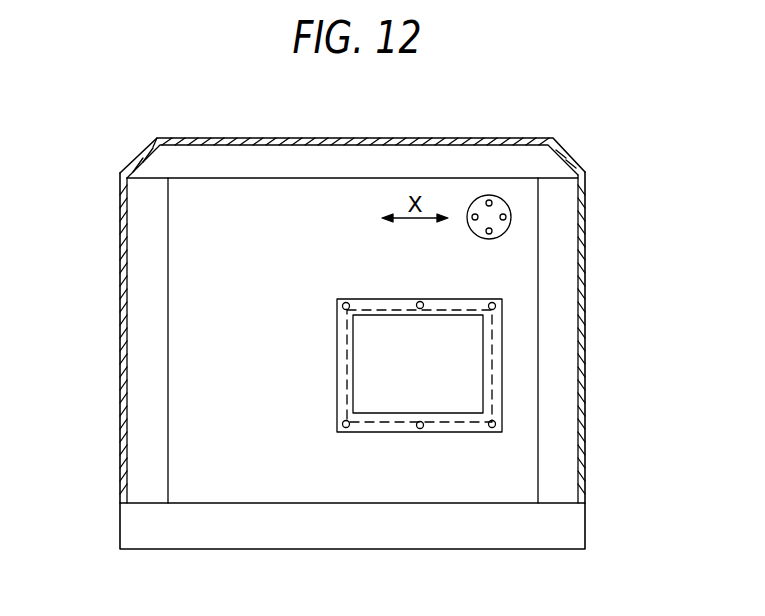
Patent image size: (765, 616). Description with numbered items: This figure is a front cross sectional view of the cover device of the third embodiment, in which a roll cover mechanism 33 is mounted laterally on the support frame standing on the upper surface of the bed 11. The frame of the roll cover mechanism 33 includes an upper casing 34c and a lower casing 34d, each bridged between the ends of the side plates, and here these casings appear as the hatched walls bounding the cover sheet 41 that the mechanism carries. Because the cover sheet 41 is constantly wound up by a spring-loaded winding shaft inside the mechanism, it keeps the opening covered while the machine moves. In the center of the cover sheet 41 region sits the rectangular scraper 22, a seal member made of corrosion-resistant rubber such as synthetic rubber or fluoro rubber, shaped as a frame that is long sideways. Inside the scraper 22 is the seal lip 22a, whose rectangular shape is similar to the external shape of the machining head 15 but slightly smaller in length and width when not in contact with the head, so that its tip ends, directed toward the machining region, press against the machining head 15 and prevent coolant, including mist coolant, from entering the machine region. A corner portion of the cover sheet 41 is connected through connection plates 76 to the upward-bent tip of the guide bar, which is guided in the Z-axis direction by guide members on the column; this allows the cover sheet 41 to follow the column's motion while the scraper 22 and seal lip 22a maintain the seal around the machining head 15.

The bed 11 is at (340, 538).
The machining head 15 is at (488, 348).
The scraper 22 is at (373, 302).
The seal lip 22a is at (402, 312).
The roll cover mechanism 33 is at (331, 176).
The upper casing 34c is at (138, 306).
The lower casing 34d is at (567, 255).
The cover sheet 41 is at (207, 370).
The connection plates 76 is at (481, 238).